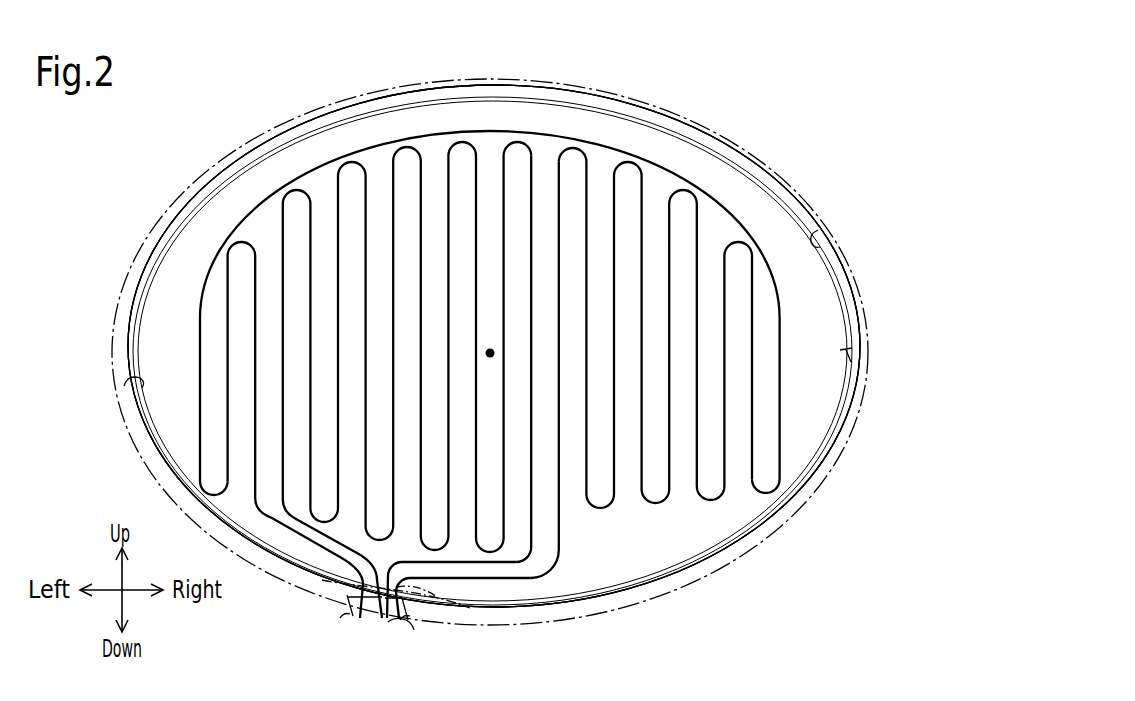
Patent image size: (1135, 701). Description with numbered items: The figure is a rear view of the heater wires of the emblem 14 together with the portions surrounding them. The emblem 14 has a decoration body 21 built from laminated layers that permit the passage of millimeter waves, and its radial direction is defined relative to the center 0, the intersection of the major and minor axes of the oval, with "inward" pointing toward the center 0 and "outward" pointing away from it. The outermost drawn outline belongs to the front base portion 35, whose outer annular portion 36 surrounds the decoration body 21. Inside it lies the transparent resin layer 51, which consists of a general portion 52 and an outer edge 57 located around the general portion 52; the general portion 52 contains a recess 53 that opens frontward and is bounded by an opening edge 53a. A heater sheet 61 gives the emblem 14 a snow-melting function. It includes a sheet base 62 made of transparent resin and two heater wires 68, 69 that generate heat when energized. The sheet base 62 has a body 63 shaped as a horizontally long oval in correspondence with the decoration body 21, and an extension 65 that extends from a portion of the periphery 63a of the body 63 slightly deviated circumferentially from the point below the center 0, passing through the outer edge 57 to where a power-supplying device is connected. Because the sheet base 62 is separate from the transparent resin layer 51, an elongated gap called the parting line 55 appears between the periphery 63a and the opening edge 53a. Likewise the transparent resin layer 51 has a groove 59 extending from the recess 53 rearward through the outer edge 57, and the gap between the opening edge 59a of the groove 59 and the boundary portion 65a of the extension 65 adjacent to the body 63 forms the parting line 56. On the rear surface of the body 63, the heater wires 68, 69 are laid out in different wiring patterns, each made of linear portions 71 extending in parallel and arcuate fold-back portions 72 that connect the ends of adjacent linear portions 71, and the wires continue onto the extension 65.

The emblem 14 is at (166, 148).
The decoration body 21 is at (492, 338).
The transparent resin layer 51 is at (492, 338).
The general portion 52 is at (368, 94).
The outer edge 57 is at (392, 86).
The recess 53 is at (818, 230).
The opening edge 53a is at (530, 346).
The parting line 55 is at (858, 290).
The heater sheet 61 is at (726, 144).
The sheet base 62 is at (494, 346).
The body 63 is at (523, 343).
The periphery 63a is at (848, 356).
The front base portion 35 is at (130, 384).
The outer annular portion 36 is at (455, 346).
The center 0 is at (494, 351).
The linear portions 71 is at (228, 344).
The fold-back portions 72 is at (290, 183).
The heater wire 68 is at (557, 522).
The heater wire 69 is at (534, 538).
The parting line 56 is at (350, 604).
The extension 65 is at (300, 627).
The boundary portion 65a is at (398, 612).
The groove 59 is at (448, 606).
The opening edge 59a is at (487, 620).